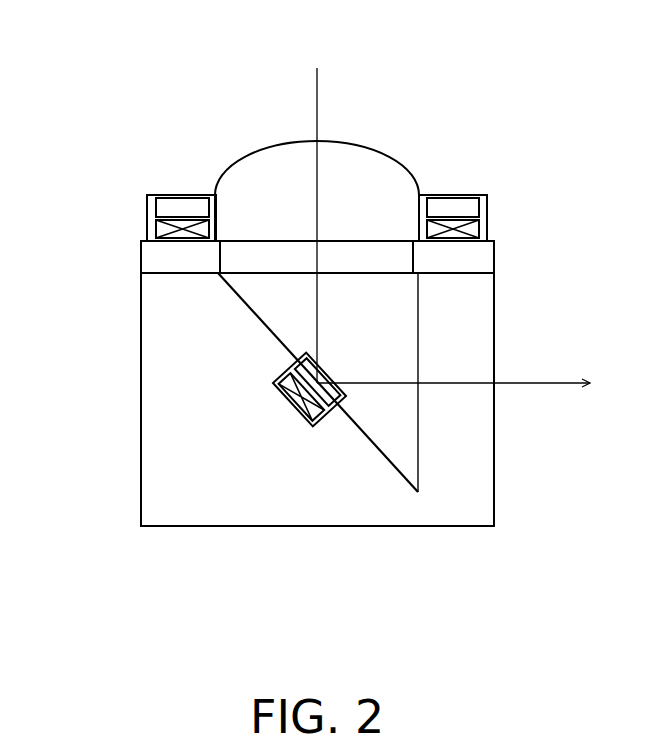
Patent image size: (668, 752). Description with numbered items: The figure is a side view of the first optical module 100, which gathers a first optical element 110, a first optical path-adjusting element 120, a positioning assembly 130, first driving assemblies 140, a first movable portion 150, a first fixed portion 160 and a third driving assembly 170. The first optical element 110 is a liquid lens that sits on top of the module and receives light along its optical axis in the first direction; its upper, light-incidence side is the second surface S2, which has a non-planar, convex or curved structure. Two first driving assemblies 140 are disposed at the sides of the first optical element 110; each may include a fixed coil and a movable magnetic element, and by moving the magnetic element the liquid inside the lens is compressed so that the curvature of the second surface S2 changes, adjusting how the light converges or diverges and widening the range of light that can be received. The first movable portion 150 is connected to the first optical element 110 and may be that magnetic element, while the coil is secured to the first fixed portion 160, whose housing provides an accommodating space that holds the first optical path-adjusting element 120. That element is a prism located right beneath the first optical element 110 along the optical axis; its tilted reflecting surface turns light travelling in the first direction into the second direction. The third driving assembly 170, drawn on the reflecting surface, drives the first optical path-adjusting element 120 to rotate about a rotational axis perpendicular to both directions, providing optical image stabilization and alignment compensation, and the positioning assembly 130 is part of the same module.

The first optical module 100 is at (106, 40).
The first optical element 110 is at (318, 158).
The first optical path-adjusting element 120 is at (387, 420).
The positioning assembly 130 is at (147, 258).
The first driving assembly 140 is at (488, 218).
The first movable portion 150 is at (180, 203).
The first fixed portion 160 is at (138, 460).
The third driving assembly 170 is at (292, 406).
The second surface S2 is at (345, 142).